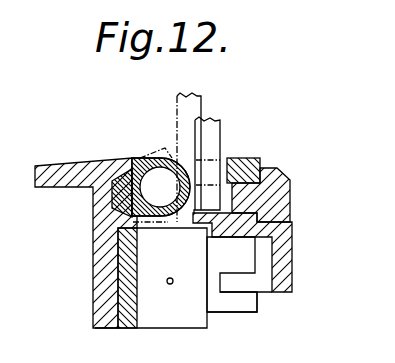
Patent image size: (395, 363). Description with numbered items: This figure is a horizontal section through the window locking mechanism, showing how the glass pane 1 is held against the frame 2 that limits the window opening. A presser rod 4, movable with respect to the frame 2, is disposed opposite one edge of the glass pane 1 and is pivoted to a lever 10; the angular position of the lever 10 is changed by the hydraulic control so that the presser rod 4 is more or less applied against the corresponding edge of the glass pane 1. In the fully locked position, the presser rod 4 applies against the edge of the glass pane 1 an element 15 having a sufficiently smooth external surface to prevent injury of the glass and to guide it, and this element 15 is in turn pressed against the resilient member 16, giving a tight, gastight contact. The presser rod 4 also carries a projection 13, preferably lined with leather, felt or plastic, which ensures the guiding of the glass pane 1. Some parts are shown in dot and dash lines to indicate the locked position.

The glass pane 1 is at (210, 130).
The frame 2 is at (104, 258).
The presser rod 4 is at (280, 230).
The lever 10 is at (245, 306).
The projection 13 is at (220, 219).
The element 15 is at (245, 170).
The resilient member 16 is at (150, 158).